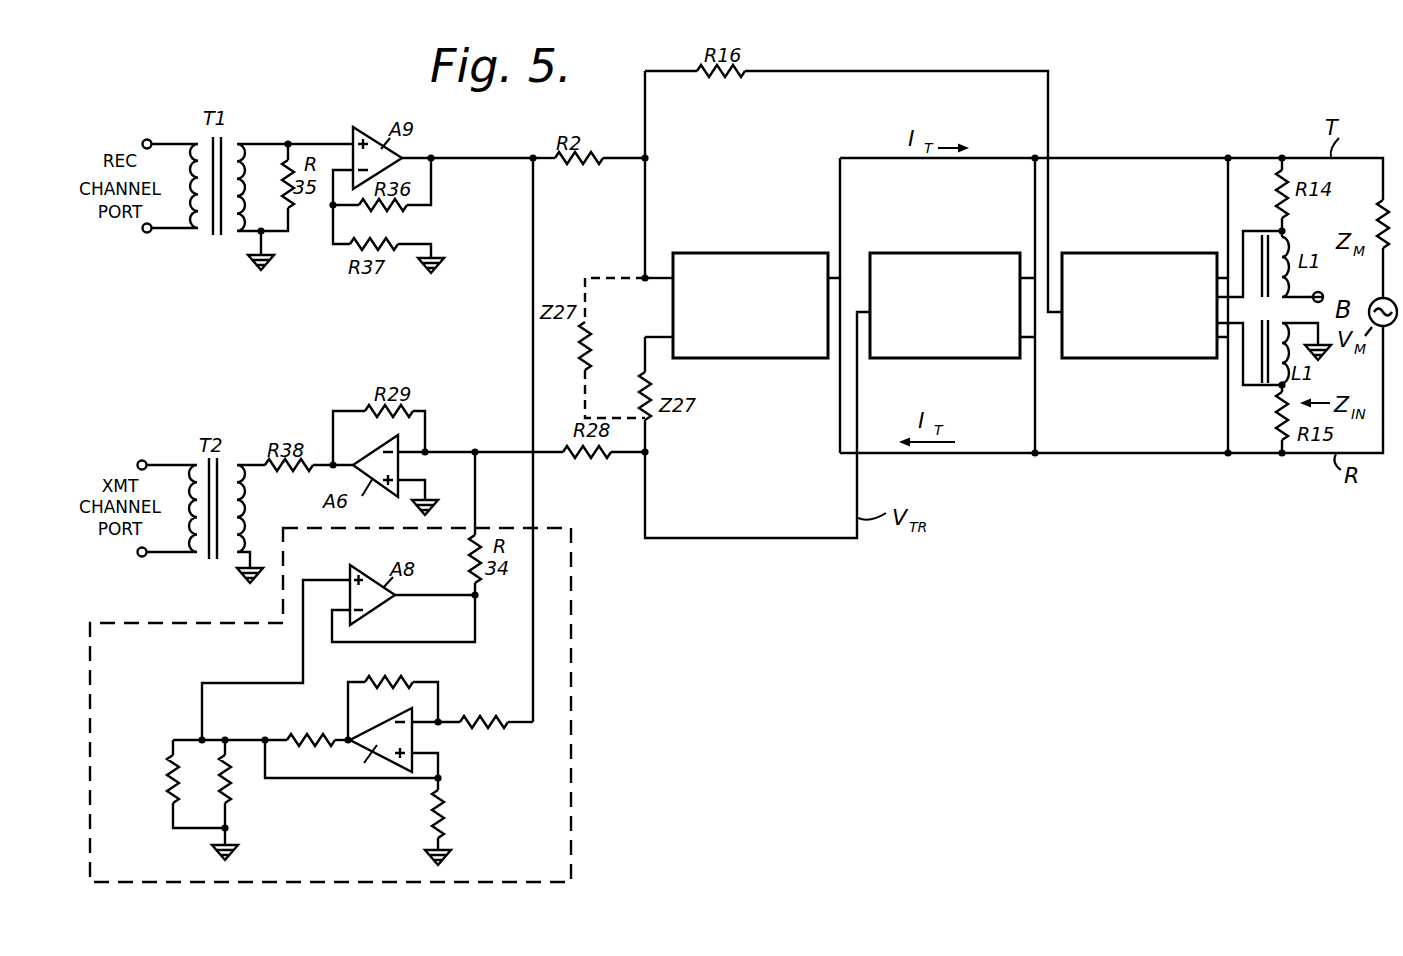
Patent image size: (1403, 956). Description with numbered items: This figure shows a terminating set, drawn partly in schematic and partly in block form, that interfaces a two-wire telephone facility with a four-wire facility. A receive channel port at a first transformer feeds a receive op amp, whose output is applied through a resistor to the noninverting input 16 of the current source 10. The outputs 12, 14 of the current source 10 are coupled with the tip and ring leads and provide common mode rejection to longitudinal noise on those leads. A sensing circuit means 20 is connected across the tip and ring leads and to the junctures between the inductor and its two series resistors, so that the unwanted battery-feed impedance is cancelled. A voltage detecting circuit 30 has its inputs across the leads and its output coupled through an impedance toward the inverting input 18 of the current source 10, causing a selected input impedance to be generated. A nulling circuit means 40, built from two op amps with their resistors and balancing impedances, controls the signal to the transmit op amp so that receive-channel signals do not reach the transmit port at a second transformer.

The current source circuit 10 is at (743, 248).
The output of the current source 12 is at (845, 240).
The output of the current source 14 is at (841, 393).
The noninverting input to the current source 16 is at (533, 157).
The inverting input to the current source 18 is at (670, 335).
The sensing circuit means 20 is at (1125, 248).
The voltage detecting circuit 30 is at (950, 248).
The nulling circuit means 40 is at (585, 641).